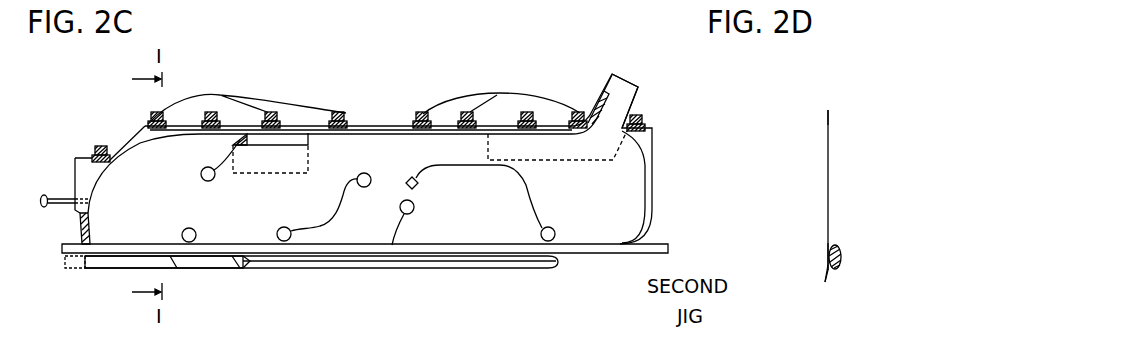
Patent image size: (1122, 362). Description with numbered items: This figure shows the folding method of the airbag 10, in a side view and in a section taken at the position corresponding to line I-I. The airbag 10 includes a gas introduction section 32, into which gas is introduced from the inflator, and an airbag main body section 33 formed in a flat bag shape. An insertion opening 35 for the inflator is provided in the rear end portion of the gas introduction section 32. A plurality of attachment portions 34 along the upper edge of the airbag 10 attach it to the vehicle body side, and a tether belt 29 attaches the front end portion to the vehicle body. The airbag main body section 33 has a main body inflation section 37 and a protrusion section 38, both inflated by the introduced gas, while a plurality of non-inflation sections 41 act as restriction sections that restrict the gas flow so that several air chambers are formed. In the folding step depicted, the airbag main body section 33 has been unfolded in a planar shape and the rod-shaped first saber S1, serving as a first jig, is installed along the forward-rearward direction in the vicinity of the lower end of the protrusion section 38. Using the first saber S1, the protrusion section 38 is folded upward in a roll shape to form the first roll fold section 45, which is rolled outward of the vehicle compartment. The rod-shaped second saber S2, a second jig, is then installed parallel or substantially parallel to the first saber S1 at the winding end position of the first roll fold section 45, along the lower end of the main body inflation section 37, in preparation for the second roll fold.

In FIG. 2C, the airbag 10 is at (407, 89).
In FIG. 2D, the airbag 10 is at (848, 227).
In FIG. 2C, the tether belt 29 is at (60, 198).
In FIG. 2C, the gas introduction section 32 is at (592, 107).
In FIG. 2C, the airbag main body section 33 is at (652, 218).
In FIG. 2D, the airbag main body section 33 is at (832, 162).
In FIG. 2C, the attachment portions 34 is at (100, 145).
In FIG. 2D, the attachment portions 34 is at (831, 120).
In FIG. 2C, the insertion opening 35 is at (622, 80).
In FIG. 2C, the main body inflation section 37 is at (359, 268).
In FIG. 2C, the protrusion section 38 is at (193, 268).
In FIG. 2C, the non-inflation sections 41 is at (216, 166).
In FIG. 2D, the first roll fold section 45 is at (841, 266).
In FIG. 2C, the first saber S1 is at (268, 268).
In FIG. 2D, the first saber S1 is at (826, 284).
In FIG. 2C, the second saber S2 is at (618, 253).
In FIG. 2D, the second saber S2 is at (833, 245).